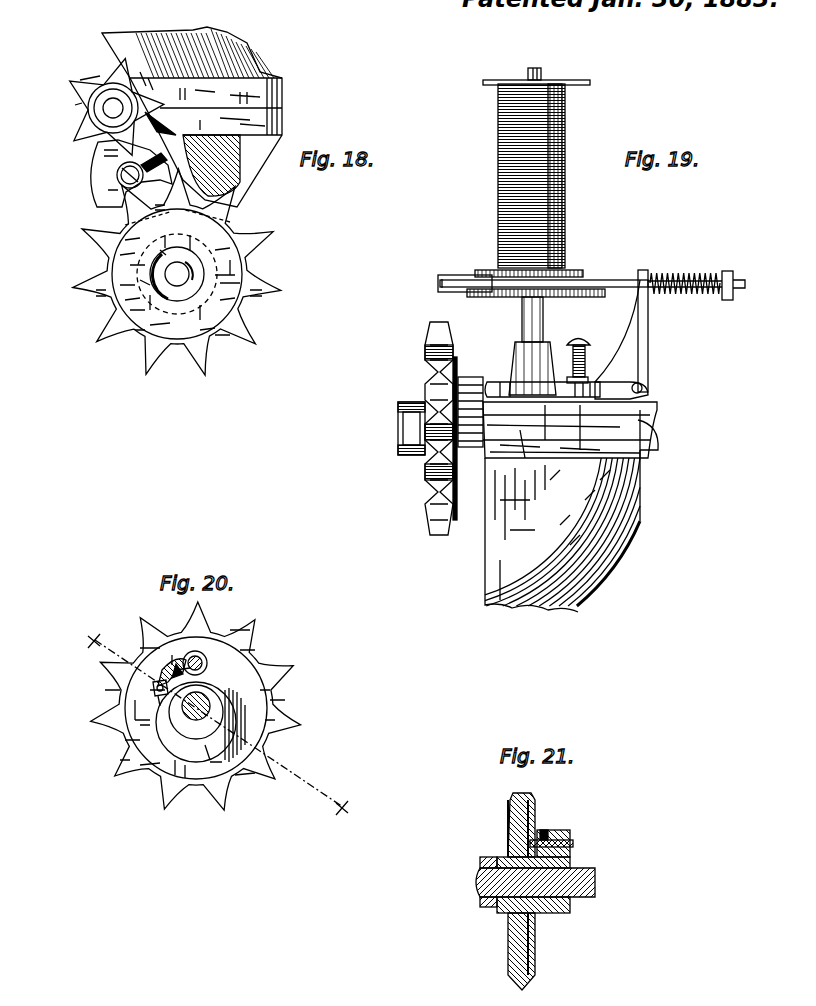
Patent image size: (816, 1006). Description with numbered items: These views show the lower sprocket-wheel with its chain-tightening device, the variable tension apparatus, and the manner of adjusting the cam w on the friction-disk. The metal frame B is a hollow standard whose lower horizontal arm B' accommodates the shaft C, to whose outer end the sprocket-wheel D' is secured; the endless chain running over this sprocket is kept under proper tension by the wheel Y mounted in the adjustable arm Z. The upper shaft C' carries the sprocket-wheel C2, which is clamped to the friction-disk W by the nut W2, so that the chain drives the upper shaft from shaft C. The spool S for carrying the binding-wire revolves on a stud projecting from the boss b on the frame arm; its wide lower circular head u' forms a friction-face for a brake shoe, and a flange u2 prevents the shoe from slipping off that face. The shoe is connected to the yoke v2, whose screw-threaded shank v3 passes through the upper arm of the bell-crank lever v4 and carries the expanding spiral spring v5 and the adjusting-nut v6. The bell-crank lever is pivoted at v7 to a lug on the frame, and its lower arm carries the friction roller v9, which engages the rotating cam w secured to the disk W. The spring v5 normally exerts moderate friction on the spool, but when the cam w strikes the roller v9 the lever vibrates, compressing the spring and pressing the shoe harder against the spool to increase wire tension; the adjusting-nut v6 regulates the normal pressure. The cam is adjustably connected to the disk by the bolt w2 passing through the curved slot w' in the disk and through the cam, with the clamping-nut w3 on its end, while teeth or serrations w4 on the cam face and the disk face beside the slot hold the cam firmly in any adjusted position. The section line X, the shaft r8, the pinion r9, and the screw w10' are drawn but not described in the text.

In FIG. 18, the metal frame B is at (192, 117).
In FIG. 19, the metal frame B is at (570, 430).
In FIG. 18, the wheel Y is at (80, 124).
In FIG. 19, the wheel Y is at (452, 292).
In FIG. 18, the adjustable arm Z is at (118, 176).
In FIG. 18, the sprocket-wheel D' is at (177, 272).
In FIG. 18, the shaft C is at (177, 274).
In FIG. 19, the spool S is at (498, 170).
In FIG. 19, the clamping-nut w3 is at (490, 268).
In FIG. 21, the clamping-nut w3 is at (562, 838).
In FIG. 19, the lower circular head u' is at (544, 272).
In FIG. 19, the flange u2 is at (590, 300).
In FIG. 19, the bolt w2 is at (480, 298).
In FIG. 20, the bolt w2 is at (153, 687).
In FIG. 21, the bolt w2 is at (578, 844).
In FIG. 19, the yoke v2 is at (505, 298).
In FIG. 19, the boss b is at (548, 362).
In FIG. 19, the horizontal shaft r8 is at (520, 388).
In FIG. 19, the screw w10' is at (590, 360).
In FIG. 19, the shank v3 is at (630, 272).
In FIG. 19, the bell-crank lever v4 is at (650, 330).
In FIG. 19, the expanding spiral spring v5 is at (688, 276).
In FIG. 19, the adjusting-nut v6 is at (730, 272).
In FIG. 19, the pivot v7 is at (648, 390).
In FIG. 19, the pinion r9 is at (468, 377).
In FIG. 19, the cam w is at (462, 438).
In FIG. 20, the cam w is at (144, 703).
In FIG. 21, the cam w is at (536, 891).
In FIG. 19, the sprocket-wheel C2 is at (425, 492).
In FIG. 20, the sprocket-wheel C2 is at (272, 700).
In FIG. 21, the sprocket-wheel C2 is at (508, 812).
In FIG. 19, the nut W2 is at (398, 434).
In FIG. 21, the nut W2 is at (480, 903).
In FIG. 19, the friction-disk W is at (455, 480).
In FIG. 20, the friction-disk W is at (161, 754).
In FIG. 19, the upper shaft C' is at (657, 446).
In FIG. 20, the upper shaft C' is at (251, 720).
In FIG. 21, the upper shaft C' is at (517, 881).
In FIG. 19, the lower horizontal arm B' is at (562, 531).
In FIG. 20, the curved slot w' is at (200, 730).
In FIG. 20, the friction roller v9 is at (200, 657).
In FIG. 20, the teeth or serrations w4 is at (172, 664).
In FIG. 20, the section line X is at (218, 724).